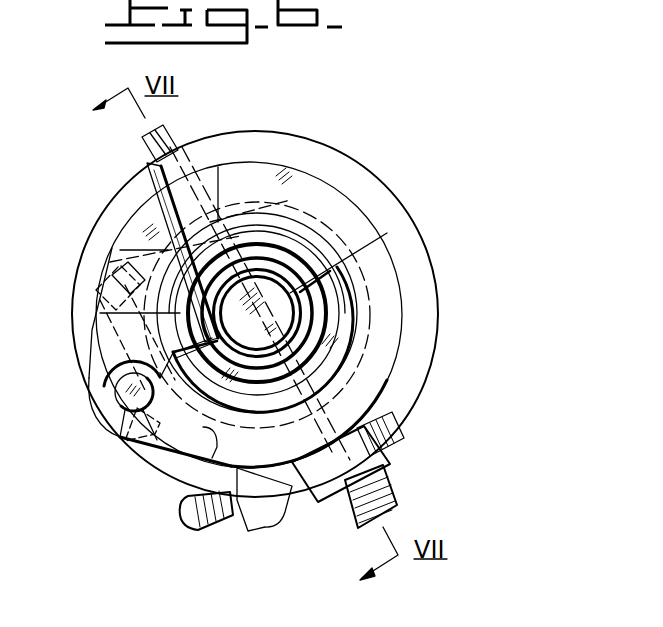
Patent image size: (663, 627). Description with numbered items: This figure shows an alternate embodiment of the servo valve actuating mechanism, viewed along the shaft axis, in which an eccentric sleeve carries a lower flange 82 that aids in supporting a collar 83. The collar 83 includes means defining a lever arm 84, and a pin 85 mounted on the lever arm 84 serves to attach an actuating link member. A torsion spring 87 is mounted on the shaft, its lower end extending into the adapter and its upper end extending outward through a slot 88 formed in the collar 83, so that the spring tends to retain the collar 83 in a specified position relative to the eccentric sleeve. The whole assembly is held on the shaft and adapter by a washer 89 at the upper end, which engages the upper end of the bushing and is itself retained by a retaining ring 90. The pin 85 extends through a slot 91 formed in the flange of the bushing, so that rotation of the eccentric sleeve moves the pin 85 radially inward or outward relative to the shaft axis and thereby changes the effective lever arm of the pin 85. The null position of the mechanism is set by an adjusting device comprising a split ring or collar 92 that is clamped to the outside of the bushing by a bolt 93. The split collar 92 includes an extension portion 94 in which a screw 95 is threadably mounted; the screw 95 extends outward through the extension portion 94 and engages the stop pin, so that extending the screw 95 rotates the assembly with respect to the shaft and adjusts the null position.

The lower flange 82 is at (362, 185).
The collar 83 is at (381, 283).
The lever arm 84 is at (98, 385).
The pin 85 is at (100, 404).
The torsion spring 87 is at (147, 180).
The slot 88 is at (138, 242).
The washer 89 is at (326, 308).
The retaining ring 90 is at (305, 333).
The slot 91 is at (122, 436).
The split ring or collar 92 is at (107, 253).
The bolt 93 is at (95, 283).
The extension portion 94 is at (262, 515).
The screw 95 is at (213, 527).